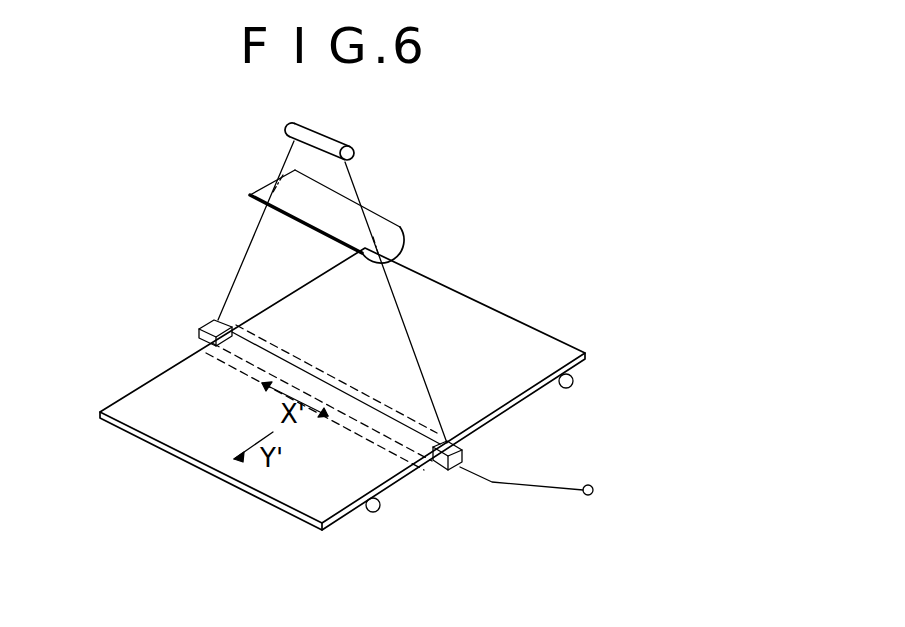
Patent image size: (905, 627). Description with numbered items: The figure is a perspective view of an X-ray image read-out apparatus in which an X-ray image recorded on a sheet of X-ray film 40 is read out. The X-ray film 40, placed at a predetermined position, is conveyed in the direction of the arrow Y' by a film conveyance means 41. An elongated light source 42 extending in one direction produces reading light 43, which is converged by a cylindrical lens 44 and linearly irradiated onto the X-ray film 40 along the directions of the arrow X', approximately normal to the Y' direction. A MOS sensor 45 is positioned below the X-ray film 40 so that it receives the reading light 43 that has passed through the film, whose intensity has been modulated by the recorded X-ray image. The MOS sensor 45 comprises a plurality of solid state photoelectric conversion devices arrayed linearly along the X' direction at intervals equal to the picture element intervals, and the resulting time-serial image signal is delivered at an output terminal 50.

The X-ray film 40 is at (555, 340).
The film conveyance means 41 is at (573, 386).
The elongated light source 42 is at (344, 146).
The reading light 43 is at (347, 181).
The cylindrical lens 44 is at (387, 224).
The MOS sensor 45 is at (462, 453).
The output terminal 50 is at (590, 495).